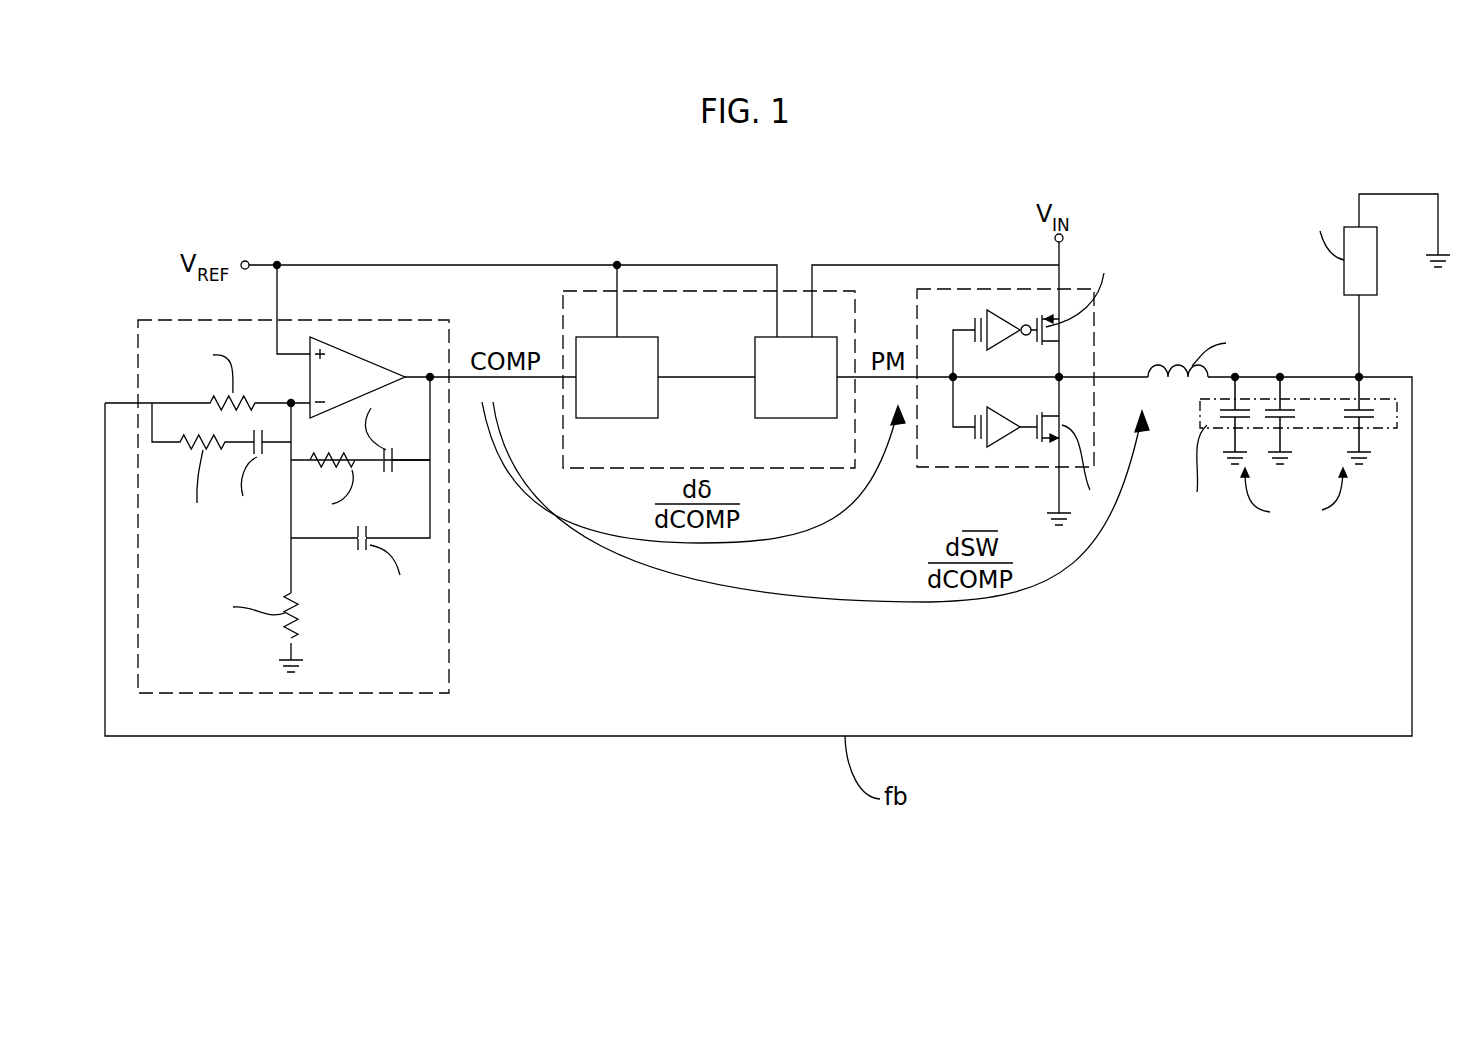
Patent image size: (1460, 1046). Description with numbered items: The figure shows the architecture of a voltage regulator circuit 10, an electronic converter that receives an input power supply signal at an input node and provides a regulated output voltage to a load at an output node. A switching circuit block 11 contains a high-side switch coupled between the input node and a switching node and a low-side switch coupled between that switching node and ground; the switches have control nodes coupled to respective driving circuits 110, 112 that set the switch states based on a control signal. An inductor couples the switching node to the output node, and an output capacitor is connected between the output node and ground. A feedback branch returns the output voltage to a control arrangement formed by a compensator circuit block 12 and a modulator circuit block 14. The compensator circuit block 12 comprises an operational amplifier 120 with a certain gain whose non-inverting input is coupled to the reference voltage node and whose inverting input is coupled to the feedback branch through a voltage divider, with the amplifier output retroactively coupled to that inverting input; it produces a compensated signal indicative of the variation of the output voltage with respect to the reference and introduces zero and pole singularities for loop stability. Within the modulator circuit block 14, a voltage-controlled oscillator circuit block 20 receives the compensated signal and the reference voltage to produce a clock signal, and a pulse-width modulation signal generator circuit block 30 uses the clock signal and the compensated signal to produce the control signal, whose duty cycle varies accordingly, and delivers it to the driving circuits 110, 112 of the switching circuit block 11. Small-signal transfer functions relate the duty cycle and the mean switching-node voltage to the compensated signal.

The voltage regulator circuit 10 is at (1184, 290).
The switching circuit block 11 is at (1008, 393).
The compensator circuit block 12 is at (329, 465).
The modulator circuit block 14 is at (674, 374).
The voltage-controlled oscillator circuit block 20 is at (610, 418).
The PWM signal generator circuit block 30 is at (790, 418).
The driving circuit 110 is at (1008, 313).
The driving circuit 112 is at (1008, 438).
The operational amplifier 120 is at (368, 362).